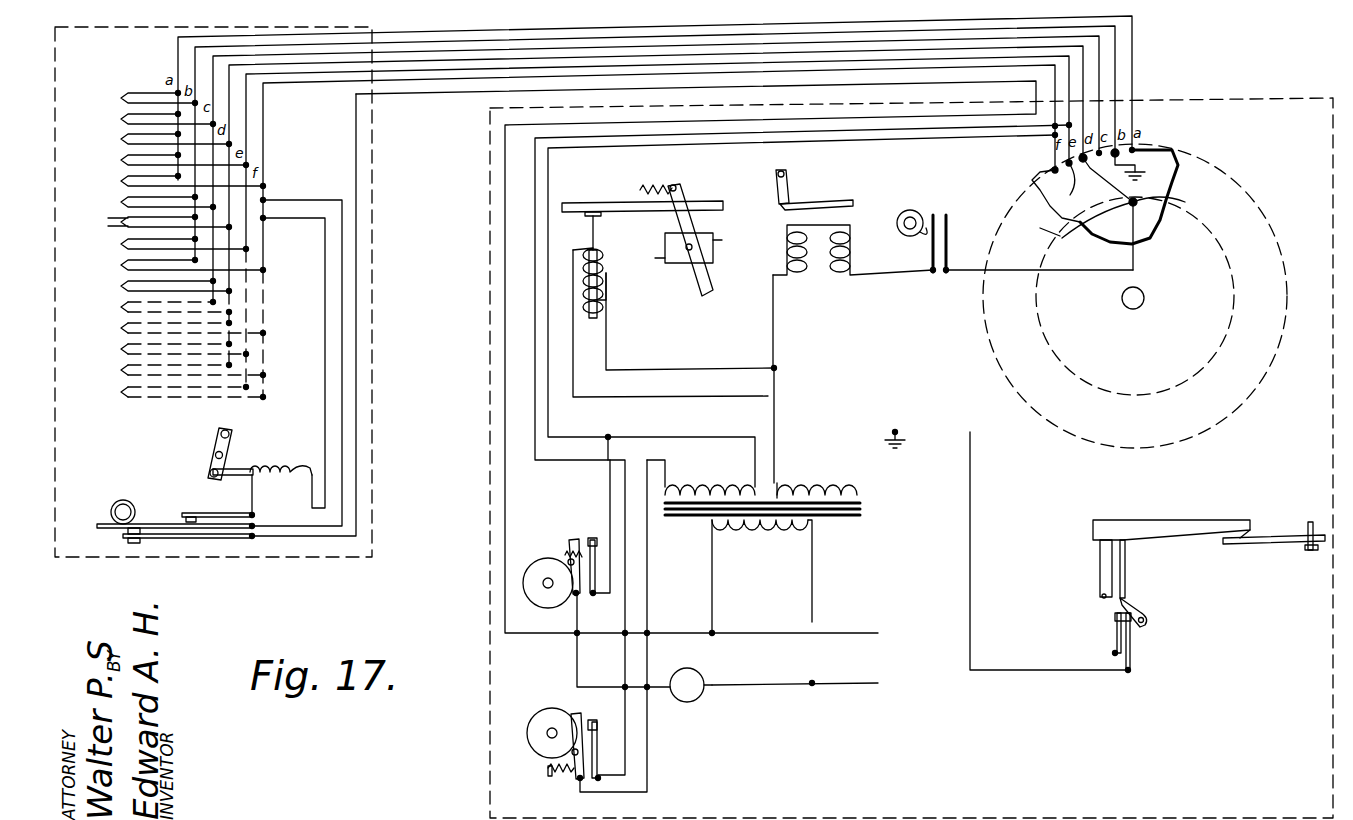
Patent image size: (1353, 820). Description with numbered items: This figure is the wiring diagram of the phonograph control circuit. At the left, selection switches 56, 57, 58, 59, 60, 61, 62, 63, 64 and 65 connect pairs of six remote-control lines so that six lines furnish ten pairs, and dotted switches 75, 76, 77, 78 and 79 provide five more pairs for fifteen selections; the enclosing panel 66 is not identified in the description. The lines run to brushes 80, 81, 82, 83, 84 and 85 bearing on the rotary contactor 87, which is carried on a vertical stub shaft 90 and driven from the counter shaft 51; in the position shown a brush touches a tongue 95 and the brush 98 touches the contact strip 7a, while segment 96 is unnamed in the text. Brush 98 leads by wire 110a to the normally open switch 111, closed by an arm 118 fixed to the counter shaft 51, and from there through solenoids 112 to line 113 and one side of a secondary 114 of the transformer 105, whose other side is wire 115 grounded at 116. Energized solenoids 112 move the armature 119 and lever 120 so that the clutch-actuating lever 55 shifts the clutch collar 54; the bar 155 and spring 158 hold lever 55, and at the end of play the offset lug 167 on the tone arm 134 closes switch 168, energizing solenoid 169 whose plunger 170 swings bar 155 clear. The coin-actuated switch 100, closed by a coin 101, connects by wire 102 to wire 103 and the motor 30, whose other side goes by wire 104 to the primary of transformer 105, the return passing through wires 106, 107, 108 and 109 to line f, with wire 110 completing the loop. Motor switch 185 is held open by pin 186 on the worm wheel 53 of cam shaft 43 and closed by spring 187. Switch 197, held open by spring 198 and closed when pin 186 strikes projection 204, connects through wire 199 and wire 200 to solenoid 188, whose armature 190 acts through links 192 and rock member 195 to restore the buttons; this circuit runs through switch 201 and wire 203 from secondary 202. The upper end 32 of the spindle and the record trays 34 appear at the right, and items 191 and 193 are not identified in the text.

The contact strip 7a is at (1174, 204).
The electric motor 30 is at (698, 700).
The upper end of spindle 32 is at (1312, 520).
The trays 34 is at (1255, 542).
The cam shaft 43 is at (540, 583).
The counter shaft 51 is at (905, 210).
The worm wheel 53 is at (548, 597).
The clutch collar 54 is at (713, 255).
The clutch-actuating lever 55 is at (698, 290).
The switch 56 is at (121, 98).
The switch 57 is at (121, 119).
The switch 58 is at (121, 139).
The switch 59 is at (121, 160).
The switch 60 is at (121, 181).
The switch 61 is at (121, 202).
The switch 62 is at (157, 222).
The switch 63 is at (121, 244).
The switch 64 is at (121, 265).
The switch 65 is at (121, 286).
The switch panel 66 is at (378, 170).
The switch 75 is at (121, 307).
The switch 76 is at (121, 328).
The switch 77 is at (121, 349).
The switch 78 is at (121, 370).
The switch 79 is at (121, 392).
The brush 80 is at (1134, 150).
The brush 81 is at (1117, 152).
The brush 82 is at (1100, 152).
The brush 83 is at (1078, 158).
The brush 84 is at (1066, 163).
The brush 85 is at (1052, 170).
The rotary contactor 87 is at (1248, 195).
The vertical stub shaft 90 is at (1145, 298).
The tongue 95 is at (1084, 214).
The commutator segment 96 is at (1172, 170).
The brush 98 is at (1086, 229).
The coin-actuated switch 100 is at (190, 502).
The coin 101 is at (117, 500).
The wire 102 is at (328, 540).
The wire 103 is at (577, 658).
The wire 104 is at (815, 583).
The transformer 105 is at (868, 509).
The wire 106 is at (715, 573).
The wire 107 is at (607, 645).
The wire 108 is at (610, 480).
The wire 109 is at (868, 141).
The wire 110 is at (325, 203).
The wire 110a is at (1058, 272).
The normally open switch 111 is at (939, 285).
The solenoids 112 is at (820, 258).
The line 113 is at (776, 340).
The secondary 114 is at (830, 468).
The wire 115 is at (968, 575).
The ground 116 is at (895, 450).
The arm 118 is at (930, 235).
The armature 119 is at (848, 200).
The lever 120 is at (794, 188).
The tone arm 134 is at (1185, 507).
The bar 155 is at (600, 204).
The spring 158 is at (655, 188).
The offset lug 167 is at (1147, 604).
The switch 168 is at (1132, 642).
The solenoid 169 is at (604, 280).
The plunger 170 is at (600, 318).
The switch 185 is at (590, 510).
The pin 186 is at (566, 560).
The spring 187 is at (596, 560).
The solenoid 188 is at (292, 448).
The armature 190 is at (228, 478).
The pivot 191 is at (208, 470).
The links 192 is at (216, 444).
The pivot 193 is at (215, 455).
The rock member 195 is at (226, 428).
The switch 197 is at (592, 722).
The spring 198 is at (565, 785).
The wire 199 is at (630, 752).
The wire 200 is at (325, 395).
The switch 201 is at (167, 512).
The secondary 202 is at (710, 495).
The wire 203 is at (650, 533).
The projection 204 is at (566, 712).